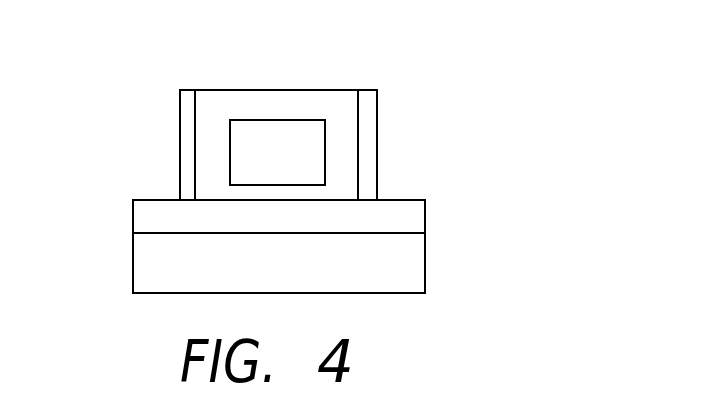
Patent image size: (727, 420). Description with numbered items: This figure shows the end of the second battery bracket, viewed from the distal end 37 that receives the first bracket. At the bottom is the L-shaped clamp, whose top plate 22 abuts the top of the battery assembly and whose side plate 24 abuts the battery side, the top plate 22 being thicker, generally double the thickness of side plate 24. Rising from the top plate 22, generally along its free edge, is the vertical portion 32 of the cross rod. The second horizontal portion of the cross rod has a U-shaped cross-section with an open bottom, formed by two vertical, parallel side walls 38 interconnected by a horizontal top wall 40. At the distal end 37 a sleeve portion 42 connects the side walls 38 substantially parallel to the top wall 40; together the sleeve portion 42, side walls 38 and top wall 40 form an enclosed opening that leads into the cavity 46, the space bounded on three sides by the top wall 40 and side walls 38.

The top plate 22 is at (407, 213).
The side plate 24 is at (405, 260).
The vertical portion 32 is at (185, 113).
The distal end 37 is at (270, 98).
The side walls 38 is at (207, 149).
The top wall 40 is at (243, 107).
The sleeve portion 42 is at (292, 190).
The cavity 46 is at (297, 147).